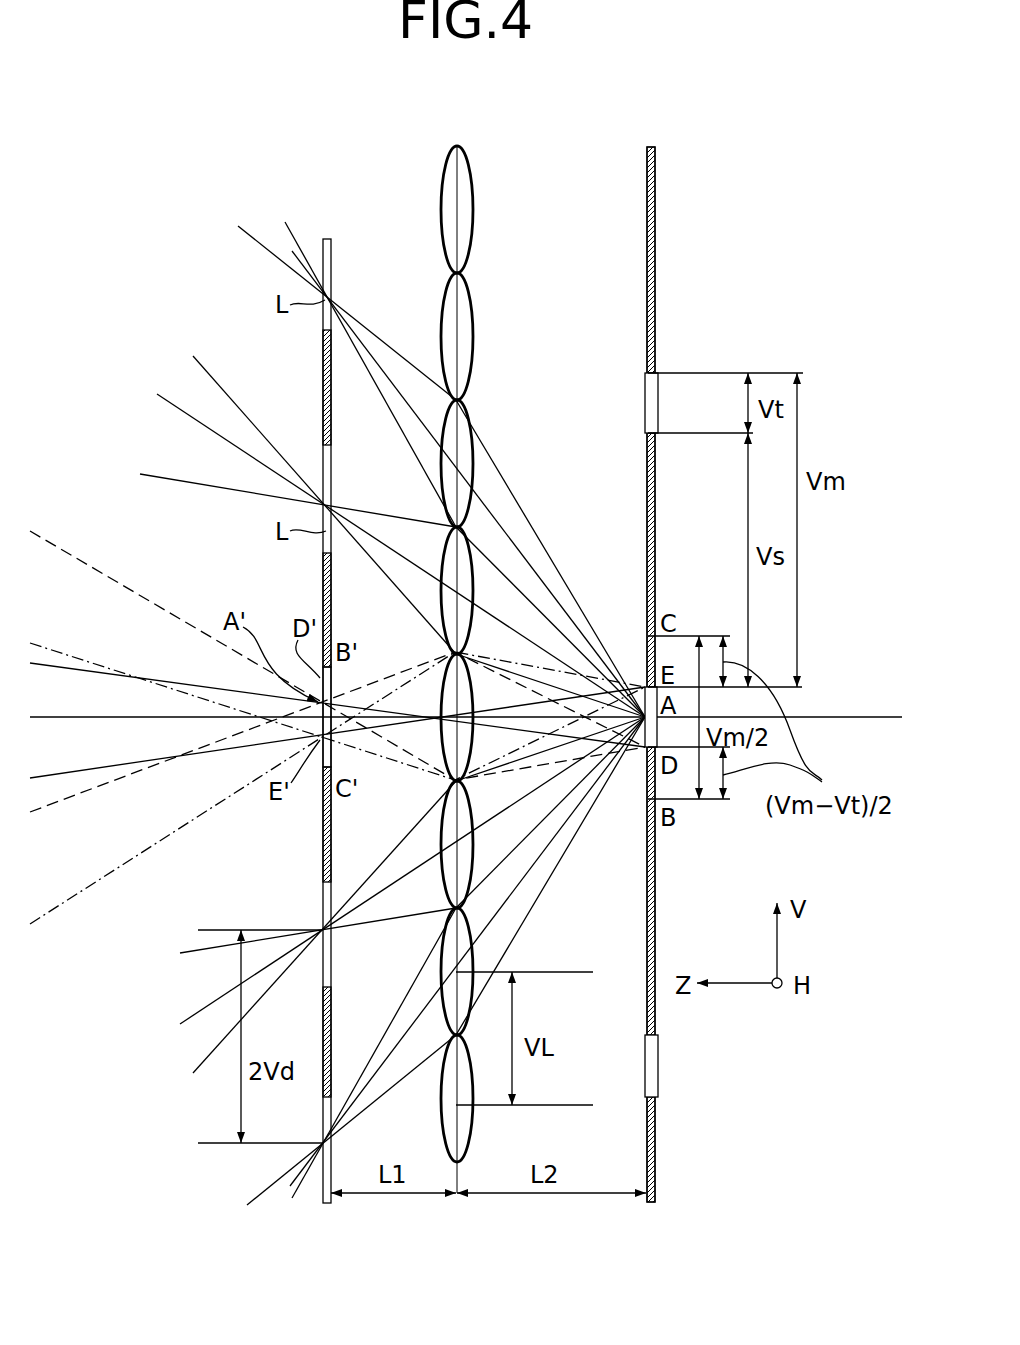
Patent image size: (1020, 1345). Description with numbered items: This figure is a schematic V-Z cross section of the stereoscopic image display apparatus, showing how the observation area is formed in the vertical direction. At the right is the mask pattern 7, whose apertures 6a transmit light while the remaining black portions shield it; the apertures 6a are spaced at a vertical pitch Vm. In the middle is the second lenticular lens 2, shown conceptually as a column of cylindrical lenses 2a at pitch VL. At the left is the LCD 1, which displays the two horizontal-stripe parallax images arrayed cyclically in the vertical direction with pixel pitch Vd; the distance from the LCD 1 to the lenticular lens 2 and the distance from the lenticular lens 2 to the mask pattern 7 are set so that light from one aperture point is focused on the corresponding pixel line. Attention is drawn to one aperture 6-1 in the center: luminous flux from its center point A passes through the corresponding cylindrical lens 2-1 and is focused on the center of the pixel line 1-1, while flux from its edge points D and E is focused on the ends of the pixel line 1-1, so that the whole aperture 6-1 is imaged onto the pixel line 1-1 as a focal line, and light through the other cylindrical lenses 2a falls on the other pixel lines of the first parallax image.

The LCD 1 is at (319, 700).
The pixel line 1-1 is at (322, 768).
The second lenticular lens 2 is at (456, 649).
The cylindrical lens 2a is at (465, 338).
The cylindrical lens 2-1 is at (448, 756).
The mask pattern 7 is at (656, 674).
The aperture 6a is at (658, 400).
The aperture 6-1 is at (645, 750).